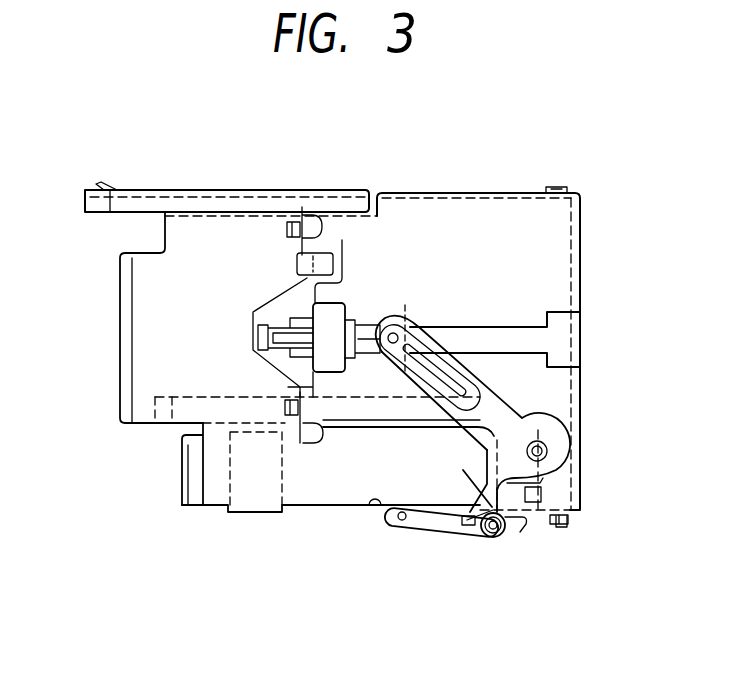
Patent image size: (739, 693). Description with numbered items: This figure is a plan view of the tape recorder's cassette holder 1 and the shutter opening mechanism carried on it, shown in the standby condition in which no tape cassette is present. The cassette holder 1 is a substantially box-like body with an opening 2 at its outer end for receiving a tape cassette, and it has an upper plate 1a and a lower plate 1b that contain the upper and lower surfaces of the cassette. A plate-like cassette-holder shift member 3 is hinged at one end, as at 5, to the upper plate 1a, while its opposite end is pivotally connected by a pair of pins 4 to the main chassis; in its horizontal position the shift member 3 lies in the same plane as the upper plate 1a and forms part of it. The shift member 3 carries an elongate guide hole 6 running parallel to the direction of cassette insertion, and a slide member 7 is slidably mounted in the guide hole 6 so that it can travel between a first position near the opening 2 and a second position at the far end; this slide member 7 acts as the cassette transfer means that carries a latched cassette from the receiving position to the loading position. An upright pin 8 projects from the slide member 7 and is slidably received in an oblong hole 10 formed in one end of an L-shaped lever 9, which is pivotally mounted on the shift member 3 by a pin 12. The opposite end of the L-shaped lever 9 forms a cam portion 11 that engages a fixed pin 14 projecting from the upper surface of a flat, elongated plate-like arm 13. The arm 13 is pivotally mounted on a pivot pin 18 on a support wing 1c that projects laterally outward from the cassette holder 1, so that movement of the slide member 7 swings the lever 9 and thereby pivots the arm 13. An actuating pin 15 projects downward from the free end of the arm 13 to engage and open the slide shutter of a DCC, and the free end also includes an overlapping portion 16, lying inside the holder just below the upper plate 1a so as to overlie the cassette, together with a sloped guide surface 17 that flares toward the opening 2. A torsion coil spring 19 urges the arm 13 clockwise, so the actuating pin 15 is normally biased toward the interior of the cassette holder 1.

The cassette holder 1 is at (258, 190).
The upper plate 1a is at (300, 498).
The lower plate 1b is at (163, 422).
The support wing 1c is at (552, 532).
The opening 2 is at (118, 338).
The cassette-holder shift member 3 is at (477, 213).
The pins 4 is at (558, 185).
The hinge 5 is at (300, 228).
The guide hole 6 is at (478, 335).
The slide member 7 is at (366, 320).
The upright pin 8 is at (396, 330).
The L-shaped lever 9 is at (485, 412).
The oblong hole 10 is at (445, 340).
The cam portion 11 is at (470, 494).
The pin 12 is at (547, 451).
The arm 13 is at (435, 530).
The fixed pin 14 is at (468, 535).
The actuating pin 15 is at (398, 527).
The overlapping portion 16 is at (410, 490).
The sloped guide surface 17 is at (370, 512).
The pivot pin 18 is at (495, 540).
The torsion coil spring 19 is at (518, 540).